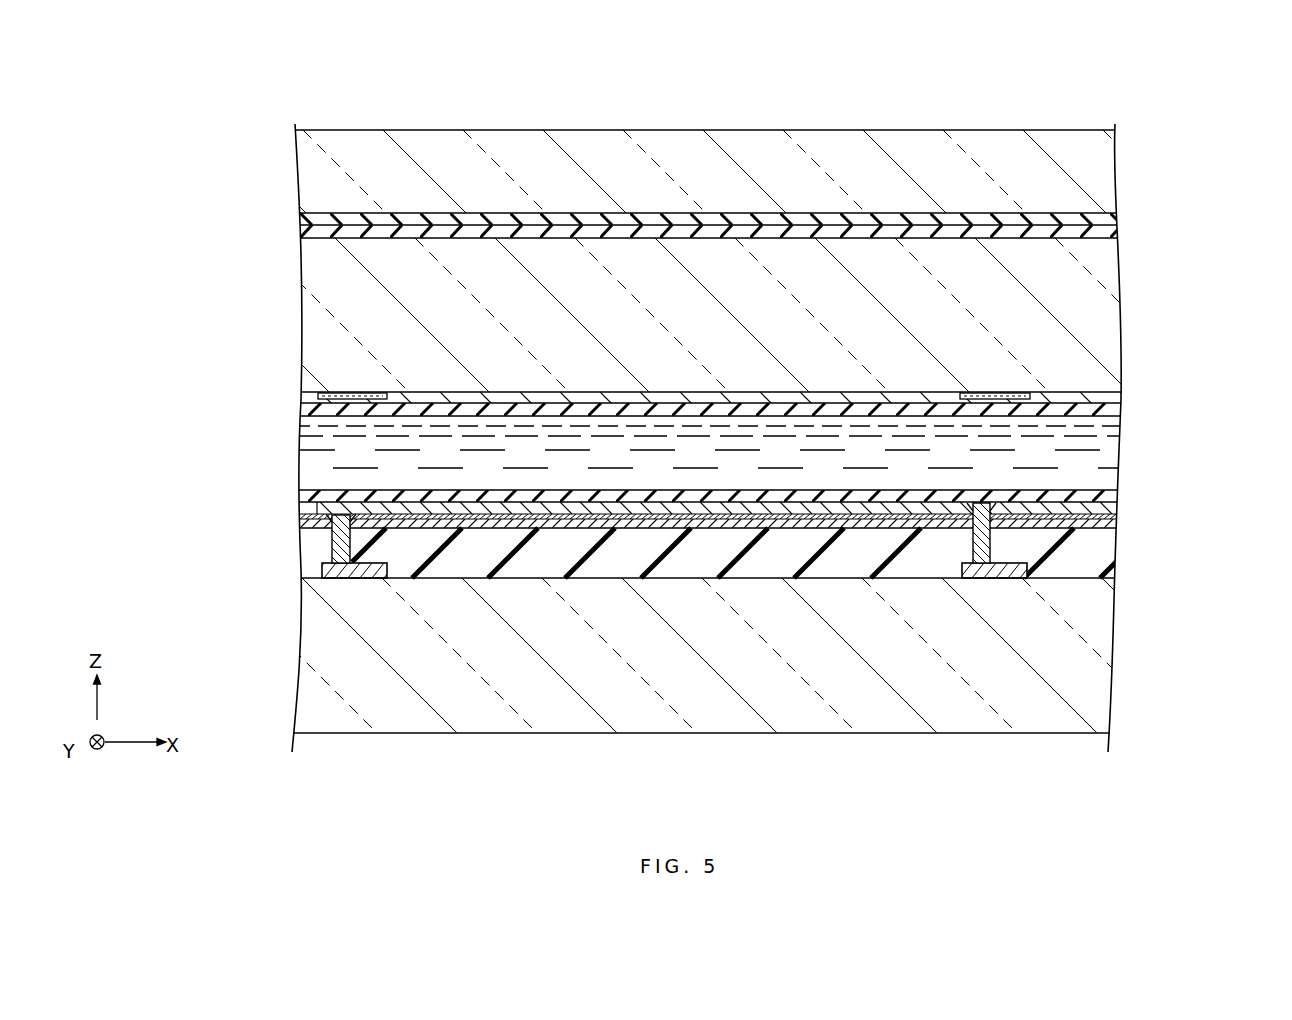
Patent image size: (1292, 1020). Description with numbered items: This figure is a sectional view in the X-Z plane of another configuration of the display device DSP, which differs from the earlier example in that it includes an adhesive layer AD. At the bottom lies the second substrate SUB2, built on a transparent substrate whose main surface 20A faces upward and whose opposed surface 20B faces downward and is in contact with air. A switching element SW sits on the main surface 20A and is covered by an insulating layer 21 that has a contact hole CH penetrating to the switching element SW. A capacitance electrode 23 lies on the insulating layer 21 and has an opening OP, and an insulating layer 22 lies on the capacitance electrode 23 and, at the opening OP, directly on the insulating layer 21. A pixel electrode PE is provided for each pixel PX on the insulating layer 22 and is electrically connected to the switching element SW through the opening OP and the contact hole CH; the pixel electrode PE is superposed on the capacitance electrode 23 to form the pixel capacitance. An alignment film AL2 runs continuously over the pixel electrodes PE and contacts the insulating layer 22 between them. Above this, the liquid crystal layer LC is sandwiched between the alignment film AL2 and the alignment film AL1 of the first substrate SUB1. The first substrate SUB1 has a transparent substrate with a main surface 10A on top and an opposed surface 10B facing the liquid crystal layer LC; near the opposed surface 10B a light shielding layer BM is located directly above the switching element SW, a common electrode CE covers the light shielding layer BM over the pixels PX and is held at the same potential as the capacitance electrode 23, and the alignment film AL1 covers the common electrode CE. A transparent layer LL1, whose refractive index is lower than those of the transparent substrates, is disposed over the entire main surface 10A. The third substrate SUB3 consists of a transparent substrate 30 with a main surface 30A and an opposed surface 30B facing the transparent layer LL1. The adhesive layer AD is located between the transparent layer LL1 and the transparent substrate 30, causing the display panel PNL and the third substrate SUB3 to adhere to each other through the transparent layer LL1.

The display device DSP is at (214, 109).
The display panel PNL is at (1206, 248).
The third substrate SUB3 is at (1118, 160).
The transparent substrate 30 is at (298, 170).
The main surface 30A is at (487, 122).
The opposed surface 30B is at (598, 228).
The adhesive layer AD is at (300, 215).
The transparent layer LL1 is at (300, 233).
The main surface 10A is at (722, 230).
The opposed surface 10B is at (835, 403).
The first substrate SUB1 is at (1132, 335).
The common electrode CE is at (300, 397).
The light shielding layer BM is at (351, 393).
The alignment film AL1 is at (300, 409).
The liquid crystal layer LC is at (300, 452).
The alignment film AL2 is at (298, 492).
The insulating layer 22 is at (298, 507).
The pixel electrode PE is at (1113, 507).
The capacitance electrode 23 is at (298, 521).
The insulating layer 21 is at (305, 555).
The pixel PX is at (557, 566).
The switching element SW is at (335, 578).
The contact hole CH is at (364, 542).
The opening OP is at (335, 537).
The main surface 20A is at (823, 567).
The opposed surface 20B is at (742, 746).
The second substrate SUB2 is at (1134, 635).